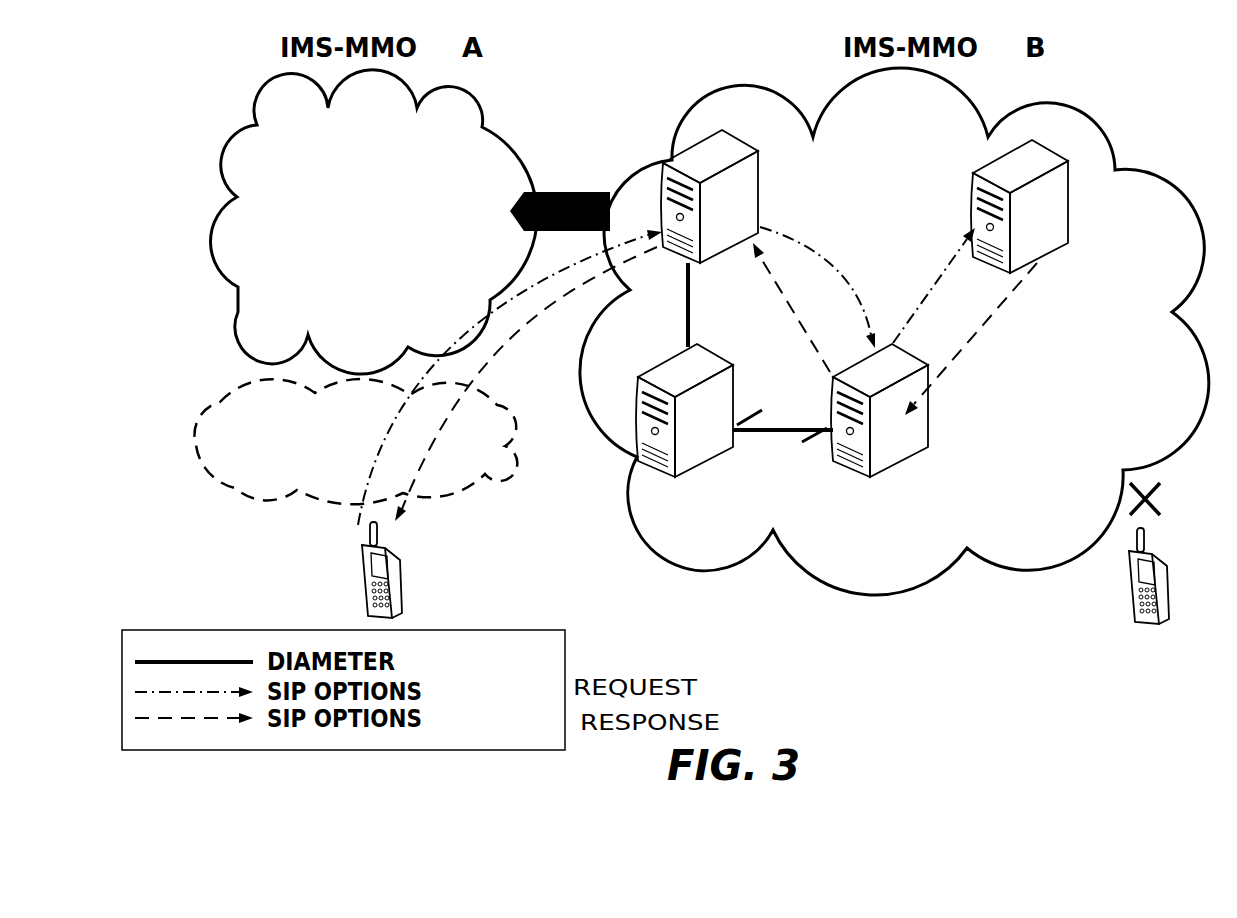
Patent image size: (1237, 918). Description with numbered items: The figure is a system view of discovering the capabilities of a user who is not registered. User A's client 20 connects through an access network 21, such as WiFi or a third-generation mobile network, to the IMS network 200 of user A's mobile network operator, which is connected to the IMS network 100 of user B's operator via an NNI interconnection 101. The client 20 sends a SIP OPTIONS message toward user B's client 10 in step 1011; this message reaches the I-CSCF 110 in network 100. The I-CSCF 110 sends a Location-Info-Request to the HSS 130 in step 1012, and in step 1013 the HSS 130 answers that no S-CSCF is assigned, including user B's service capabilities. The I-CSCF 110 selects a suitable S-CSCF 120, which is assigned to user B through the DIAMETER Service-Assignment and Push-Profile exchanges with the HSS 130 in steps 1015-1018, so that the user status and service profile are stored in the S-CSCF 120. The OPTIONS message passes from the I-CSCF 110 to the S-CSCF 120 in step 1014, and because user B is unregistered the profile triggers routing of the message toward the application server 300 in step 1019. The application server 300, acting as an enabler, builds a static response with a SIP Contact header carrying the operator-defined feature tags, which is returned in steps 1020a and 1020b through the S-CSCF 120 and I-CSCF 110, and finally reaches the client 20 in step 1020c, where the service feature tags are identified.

The IMS network of user A's mobile network operator 200 is at (220, 177).
The IMS network of user B's mobile network operator 100 is at (1113, 147).
The access network 21 is at (220, 400).
The NNI interconnection 101 is at (593, 187).
The I-CSCF 110 is at (710, 157).
The application server 300 is at (1010, 175).
The HSS 130 is at (657, 443).
The S-CSCF 120 is at (888, 450).
The Location-Info-Request step 1012 is at (688, 343).
The Location-Info-Answer step 1013 is at (689, 265).
The DIAMETER Service-Assignment and Push-Profile exchange steps 1015-1018 is at (783, 430).
The SIP OPTIONS sending step 1011 is at (510, 377).
The response delivery step 1020c is at (526, 384).
The SIP OPTIONS request I-CSCF to S-CSCF 1014 is at (817, 287).
The static response forwarding step 1020b is at (775, 307).
The OPTIONS routing step 1019 is at (922, 285).
The static response building step 1020a is at (986, 339).
The client of user A 20 is at (400, 580).
The client of user B 10 is at (1133, 595).